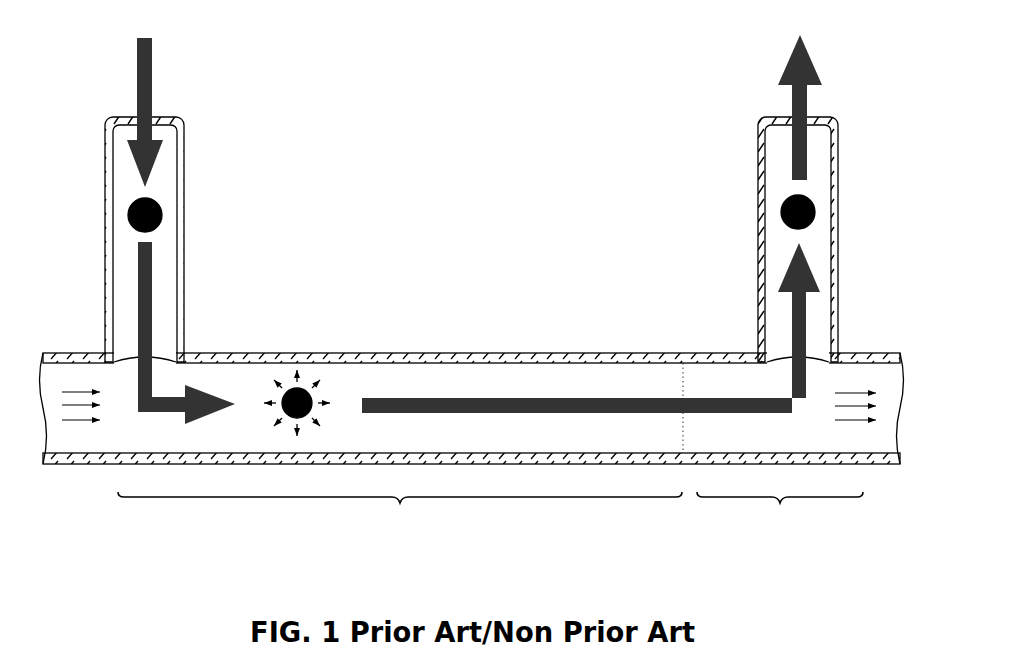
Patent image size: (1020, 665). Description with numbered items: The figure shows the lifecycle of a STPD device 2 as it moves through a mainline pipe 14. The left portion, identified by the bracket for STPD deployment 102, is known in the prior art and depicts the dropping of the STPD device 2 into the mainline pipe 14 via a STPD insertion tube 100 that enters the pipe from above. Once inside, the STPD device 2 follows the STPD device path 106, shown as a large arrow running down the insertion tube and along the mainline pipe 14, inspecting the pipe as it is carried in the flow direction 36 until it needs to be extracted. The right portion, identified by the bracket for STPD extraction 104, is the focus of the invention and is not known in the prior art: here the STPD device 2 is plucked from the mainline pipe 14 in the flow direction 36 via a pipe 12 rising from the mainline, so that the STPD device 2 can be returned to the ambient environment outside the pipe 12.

The STPD device 2 is at (166, 212).
The pipe 12 is at (757, 159).
The mainline pipe 14 is at (704, 350).
The flow direction 36 is at (84, 430).
The STPD insertion tube 100 is at (186, 160).
The STPD deployment 102 is at (400, 506).
The STPD extraction 104 is at (780, 506).
The STPD device path 106 is at (134, 75).